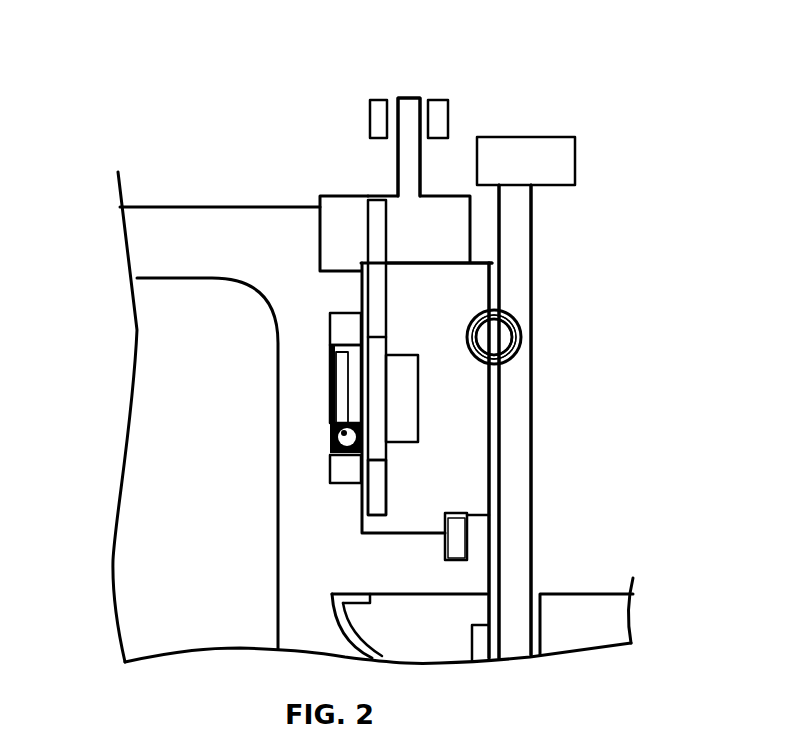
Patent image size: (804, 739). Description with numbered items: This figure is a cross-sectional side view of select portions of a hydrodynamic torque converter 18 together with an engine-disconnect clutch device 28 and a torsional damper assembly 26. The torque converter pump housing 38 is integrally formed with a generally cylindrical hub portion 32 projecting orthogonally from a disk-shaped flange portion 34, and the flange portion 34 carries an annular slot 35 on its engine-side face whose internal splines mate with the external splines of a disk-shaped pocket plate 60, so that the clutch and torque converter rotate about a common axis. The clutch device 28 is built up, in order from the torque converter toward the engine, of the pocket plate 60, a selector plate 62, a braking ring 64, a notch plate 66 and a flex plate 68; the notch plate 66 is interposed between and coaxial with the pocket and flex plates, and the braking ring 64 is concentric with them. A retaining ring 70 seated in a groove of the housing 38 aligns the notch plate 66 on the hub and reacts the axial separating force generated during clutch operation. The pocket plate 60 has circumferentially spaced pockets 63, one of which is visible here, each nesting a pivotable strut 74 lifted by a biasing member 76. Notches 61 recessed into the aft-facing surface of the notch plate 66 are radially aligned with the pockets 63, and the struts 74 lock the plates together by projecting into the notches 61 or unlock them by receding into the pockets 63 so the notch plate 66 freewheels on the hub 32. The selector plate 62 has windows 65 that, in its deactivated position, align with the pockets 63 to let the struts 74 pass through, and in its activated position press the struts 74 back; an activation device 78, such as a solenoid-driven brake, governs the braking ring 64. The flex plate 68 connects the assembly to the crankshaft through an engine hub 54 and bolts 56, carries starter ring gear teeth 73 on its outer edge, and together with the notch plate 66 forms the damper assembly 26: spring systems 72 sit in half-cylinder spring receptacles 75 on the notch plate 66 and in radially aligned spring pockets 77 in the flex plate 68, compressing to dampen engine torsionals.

The torque converter 18 is at (146, 128).
The damper assembly 26 is at (665, 321).
The engine-disconnect clutch device 28 is at (332, 128).
The hub portion 32 is at (480, 562).
The flange portion 34 is at (280, 224).
The annular slot 35 is at (343, 322).
The pump housing 38 is at (205, 205).
The engine hub 54 is at (612, 620).
The bolts 56 is at (482, 653).
The pocket plate 60 is at (343, 468).
The notches 61 is at (415, 380).
The selector plate 62 is at (375, 502).
The pockets 63 is at (336, 385).
The braking ring 64 is at (397, 152).
The windows 65 is at (375, 458).
The notch plate 66 is at (463, 478).
The flex plate 68 is at (531, 283).
The retaining ring 70 is at (460, 543).
The spring systems 72 is at (522, 335).
The gear teeth 73 is at (565, 137).
The strut 74 is at (345, 408).
The spring receptacles 75 is at (490, 336).
The biasing member 76 is at (343, 457).
The spring pockets 77 is at (503, 362).
The activation device 78 is at (445, 98).